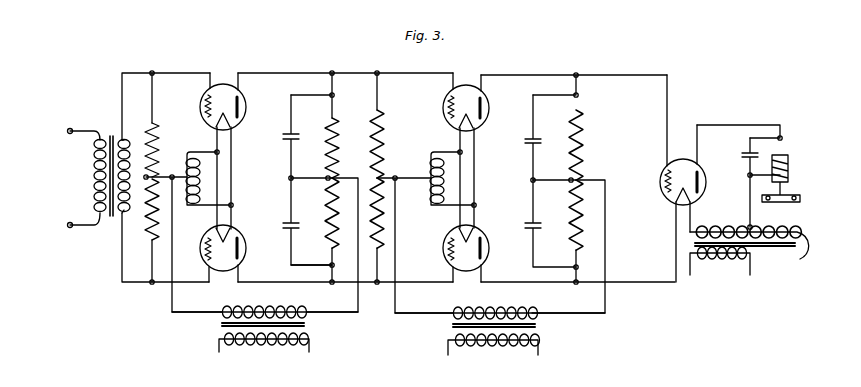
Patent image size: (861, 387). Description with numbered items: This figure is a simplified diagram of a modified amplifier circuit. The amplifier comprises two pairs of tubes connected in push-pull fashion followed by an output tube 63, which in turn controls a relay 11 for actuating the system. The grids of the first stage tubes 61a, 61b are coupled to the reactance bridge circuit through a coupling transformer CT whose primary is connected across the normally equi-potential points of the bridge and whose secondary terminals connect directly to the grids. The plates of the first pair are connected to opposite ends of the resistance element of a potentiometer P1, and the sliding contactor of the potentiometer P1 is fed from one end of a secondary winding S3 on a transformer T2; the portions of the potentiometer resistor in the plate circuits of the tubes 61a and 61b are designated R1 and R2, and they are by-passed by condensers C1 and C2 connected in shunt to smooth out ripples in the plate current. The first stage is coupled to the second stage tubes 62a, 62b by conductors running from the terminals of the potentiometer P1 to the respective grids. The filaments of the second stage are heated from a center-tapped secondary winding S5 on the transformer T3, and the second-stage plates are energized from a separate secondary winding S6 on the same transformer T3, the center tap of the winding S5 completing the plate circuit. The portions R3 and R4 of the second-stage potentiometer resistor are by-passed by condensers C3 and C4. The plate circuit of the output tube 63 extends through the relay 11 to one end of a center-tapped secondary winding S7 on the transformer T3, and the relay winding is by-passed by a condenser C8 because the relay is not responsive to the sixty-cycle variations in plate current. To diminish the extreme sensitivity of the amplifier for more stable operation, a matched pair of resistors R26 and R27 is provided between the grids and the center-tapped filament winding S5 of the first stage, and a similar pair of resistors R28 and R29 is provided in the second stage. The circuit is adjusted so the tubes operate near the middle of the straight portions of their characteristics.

The coupling transformer CT is at (110, 228).
The resistor R26 is at (157, 136).
The resistor R27 is at (160, 214).
The filament heating winding S5 is at (330, 178).
The first stage tube 61a is at (242, 103).
The first stage tube 61b is at (243, 250).
The second stage tube 62a is at (447, 97).
The second stage tube 62b is at (448, 250).
The output tube 63 is at (692, 160).
The condenser C1 is at (283, 136).
The condenser C2 is at (283, 225).
The condenser C3 is at (525, 138).
The condenser C4 is at (525, 223).
The condenser C8 is at (742, 155).
The portion of potentiometer resistor R1 is at (326, 165).
The portion of potentiometer resistor R2 is at (328, 198).
The portion of potentiometer resistor R3 is at (570, 130).
The portion of potentiometer resistor R4 is at (572, 198).
The resistor R28 is at (385, 143).
The resistor R29 is at (384, 220).
The potentiometer P1 is at (318, 247).
The relay 11 is at (789, 170).
The secondary winding S3 is at (250, 311).
The secondary winding S6 is at (478, 312).
The secondary winding S7 is at (749, 248).
The transformer T2 is at (275, 369).
The transformer T3 is at (505, 369).